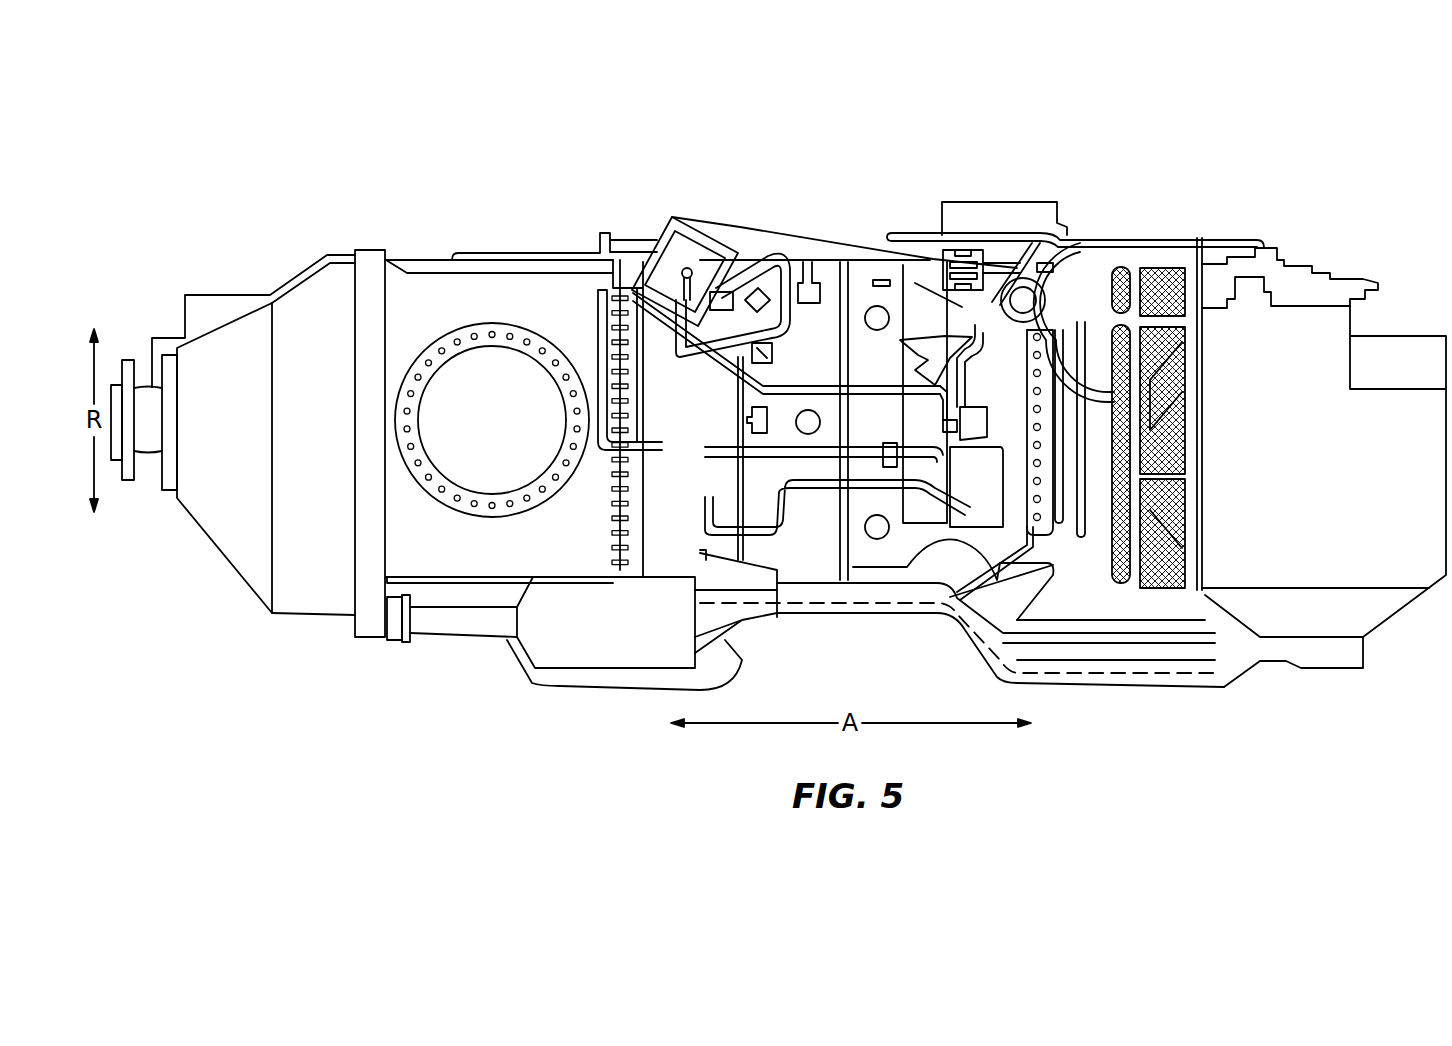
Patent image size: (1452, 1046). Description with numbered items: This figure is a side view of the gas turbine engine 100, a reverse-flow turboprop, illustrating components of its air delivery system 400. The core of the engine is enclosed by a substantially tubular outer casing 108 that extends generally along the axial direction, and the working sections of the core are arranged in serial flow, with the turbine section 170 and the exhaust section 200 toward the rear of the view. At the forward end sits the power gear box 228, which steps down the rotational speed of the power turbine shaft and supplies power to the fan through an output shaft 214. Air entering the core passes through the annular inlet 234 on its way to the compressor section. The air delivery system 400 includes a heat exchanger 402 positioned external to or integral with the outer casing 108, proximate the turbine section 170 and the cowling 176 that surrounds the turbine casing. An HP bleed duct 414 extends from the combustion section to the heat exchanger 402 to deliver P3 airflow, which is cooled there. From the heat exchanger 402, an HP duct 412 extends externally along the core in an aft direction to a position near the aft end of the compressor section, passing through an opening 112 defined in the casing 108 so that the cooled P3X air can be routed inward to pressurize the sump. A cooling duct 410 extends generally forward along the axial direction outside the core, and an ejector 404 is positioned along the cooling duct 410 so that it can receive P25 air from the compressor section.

The gas turbine engine 100 is at (368, 158).
The outer casing 108 is at (802, 547).
The opening 112 is at (946, 427).
The turbine section 170 is at (649, 218).
The cowling 176 is at (663, 373).
The exhaust section 200 is at (479, 424).
The output shaft 214 is at (152, 413).
The power gear box 228 is at (218, 435).
The annular inlet 234 is at (1160, 263).
The air delivery system 400 is at (880, 181).
The heat exchanger 402 is at (673, 218).
The ejector 404 is at (962, 238).
The cooling duct 410 is at (828, 247).
The HP duct 412 is at (750, 377).
The HP bleed duct 414 is at (786, 262).